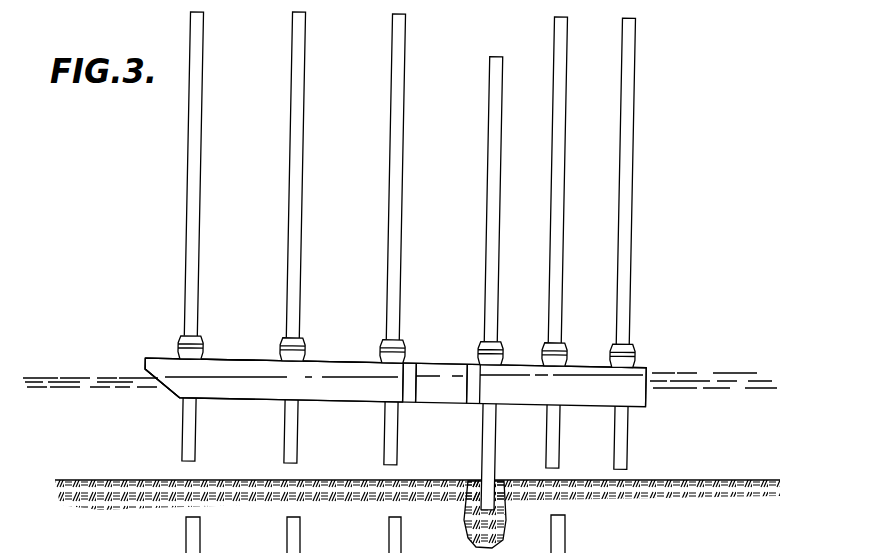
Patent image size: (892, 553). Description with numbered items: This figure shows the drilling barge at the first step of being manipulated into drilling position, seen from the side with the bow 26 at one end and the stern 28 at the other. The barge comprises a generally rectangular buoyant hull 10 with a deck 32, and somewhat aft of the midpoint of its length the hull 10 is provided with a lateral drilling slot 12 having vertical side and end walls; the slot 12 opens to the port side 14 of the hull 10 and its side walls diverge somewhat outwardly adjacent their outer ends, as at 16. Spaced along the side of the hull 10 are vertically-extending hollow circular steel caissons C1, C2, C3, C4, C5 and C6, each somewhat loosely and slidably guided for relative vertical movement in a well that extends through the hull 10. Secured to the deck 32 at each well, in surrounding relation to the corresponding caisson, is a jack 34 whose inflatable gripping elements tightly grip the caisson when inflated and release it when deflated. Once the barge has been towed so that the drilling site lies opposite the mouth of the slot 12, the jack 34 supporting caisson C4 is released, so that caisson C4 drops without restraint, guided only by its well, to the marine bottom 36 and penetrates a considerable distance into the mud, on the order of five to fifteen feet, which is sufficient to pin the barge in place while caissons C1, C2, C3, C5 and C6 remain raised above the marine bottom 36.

The caisson C1 is at (202, 156).
The caisson C2 is at (302, 152).
The caisson C3 is at (403, 144).
The caisson C4 is at (501, 144).
The caisson C5 is at (565, 140).
The caisson C6 is at (636, 139).
The hull 10 is at (335, 353).
The drilling slot 12 is at (437, 365).
The port side 14 is at (232, 363).
The outwardly diverging side walls 16 is at (416, 365).
The bow 26 is at (145, 361).
The stern 28 is at (649, 370).
The deck 32 is at (262, 358).
The jack 34 is at (197, 338).
The marine bottom 36 is at (131, 482).